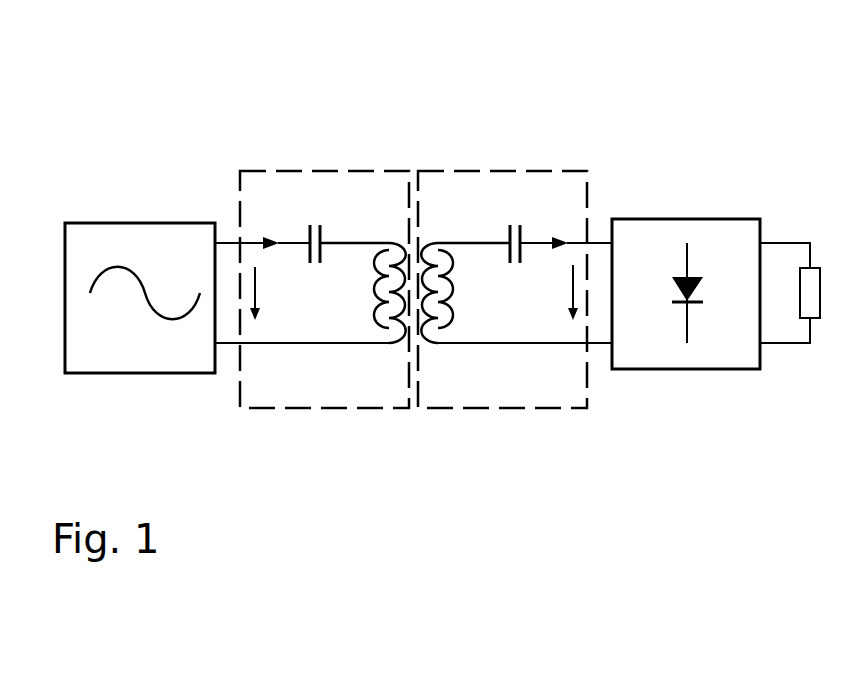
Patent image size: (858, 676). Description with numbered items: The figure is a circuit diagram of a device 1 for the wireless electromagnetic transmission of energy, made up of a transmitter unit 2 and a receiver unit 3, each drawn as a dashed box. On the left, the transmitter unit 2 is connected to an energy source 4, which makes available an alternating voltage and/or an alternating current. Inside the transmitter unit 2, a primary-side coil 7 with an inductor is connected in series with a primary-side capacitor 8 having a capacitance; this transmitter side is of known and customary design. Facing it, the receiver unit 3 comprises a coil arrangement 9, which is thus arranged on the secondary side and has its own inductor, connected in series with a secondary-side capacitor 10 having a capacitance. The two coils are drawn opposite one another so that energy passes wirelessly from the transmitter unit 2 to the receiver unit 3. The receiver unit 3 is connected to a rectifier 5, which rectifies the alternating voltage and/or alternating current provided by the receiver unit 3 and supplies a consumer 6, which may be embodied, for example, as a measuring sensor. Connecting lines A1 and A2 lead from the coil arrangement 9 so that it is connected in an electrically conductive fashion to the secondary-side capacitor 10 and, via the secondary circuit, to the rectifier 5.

The device for the wireless electromagnetic transmission of energy 1 is at (436, 106).
The transmitter unit 2 is at (249, 158).
The receiver unit 3 is at (582, 156).
The energy source 4 is at (137, 238).
The rectifier 5 is at (676, 228).
The consumer 6 is at (813, 280).
The primary-side coil 7 is at (375, 240).
The primary-side capacitor 8 is at (305, 238).
The coil arrangement 9 is at (440, 232).
The secondary-side capacitor 10 is at (519, 240).
The connecting line A1 is at (463, 242).
The connecting line A2 is at (463, 344).